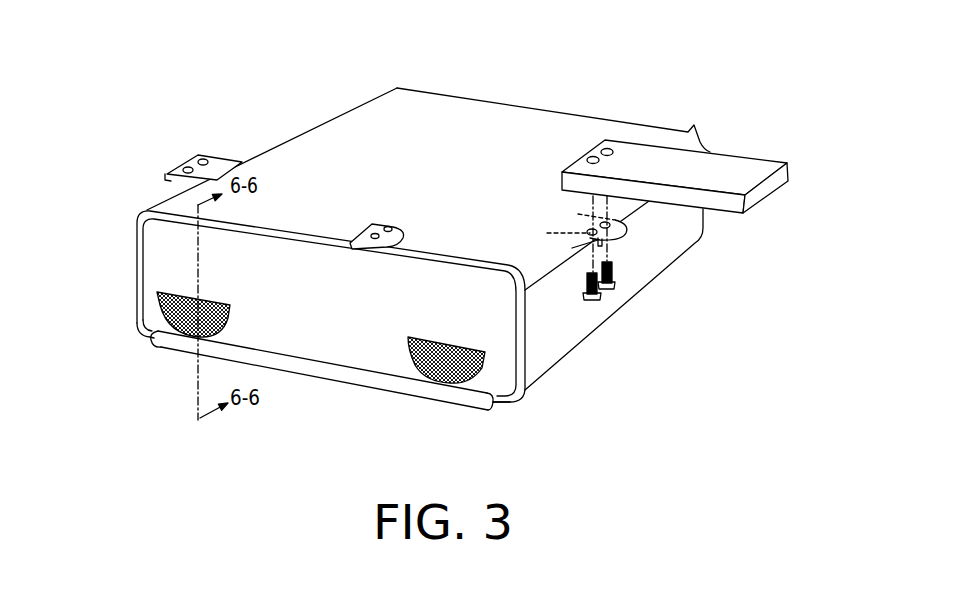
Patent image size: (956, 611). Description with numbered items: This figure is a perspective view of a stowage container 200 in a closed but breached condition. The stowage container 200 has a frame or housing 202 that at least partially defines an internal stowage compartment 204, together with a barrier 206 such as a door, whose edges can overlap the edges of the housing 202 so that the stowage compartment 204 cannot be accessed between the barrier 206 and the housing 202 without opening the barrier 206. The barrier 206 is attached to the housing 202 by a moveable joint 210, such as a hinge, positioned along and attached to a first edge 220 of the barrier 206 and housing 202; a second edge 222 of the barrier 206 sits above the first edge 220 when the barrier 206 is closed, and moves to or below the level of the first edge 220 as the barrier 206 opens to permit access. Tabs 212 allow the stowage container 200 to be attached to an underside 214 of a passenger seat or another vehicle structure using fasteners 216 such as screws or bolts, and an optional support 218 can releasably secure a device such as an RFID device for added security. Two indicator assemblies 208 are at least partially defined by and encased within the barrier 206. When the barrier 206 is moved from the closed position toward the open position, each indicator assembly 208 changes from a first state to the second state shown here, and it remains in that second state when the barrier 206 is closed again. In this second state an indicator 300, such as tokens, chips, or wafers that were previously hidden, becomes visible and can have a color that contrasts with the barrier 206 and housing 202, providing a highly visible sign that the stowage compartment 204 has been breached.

The stowage container 200 is at (234, 63).
The frame or housing 202 is at (382, 103).
The stowage compartment 204 is at (532, 122).
The barrier 206 is at (142, 258).
The indicator assembly 208 is at (164, 351).
The moveable joint 210 is at (318, 378).
The tabs 212 is at (196, 158).
The underside of a passenger seat 214 is at (737, 165).
The fasteners 216 is at (604, 294).
The support 218 is at (367, 226).
The first edge 220 is at (510, 403).
The second edge 222 is at (462, 262).
The indicator 300 is at (196, 335).